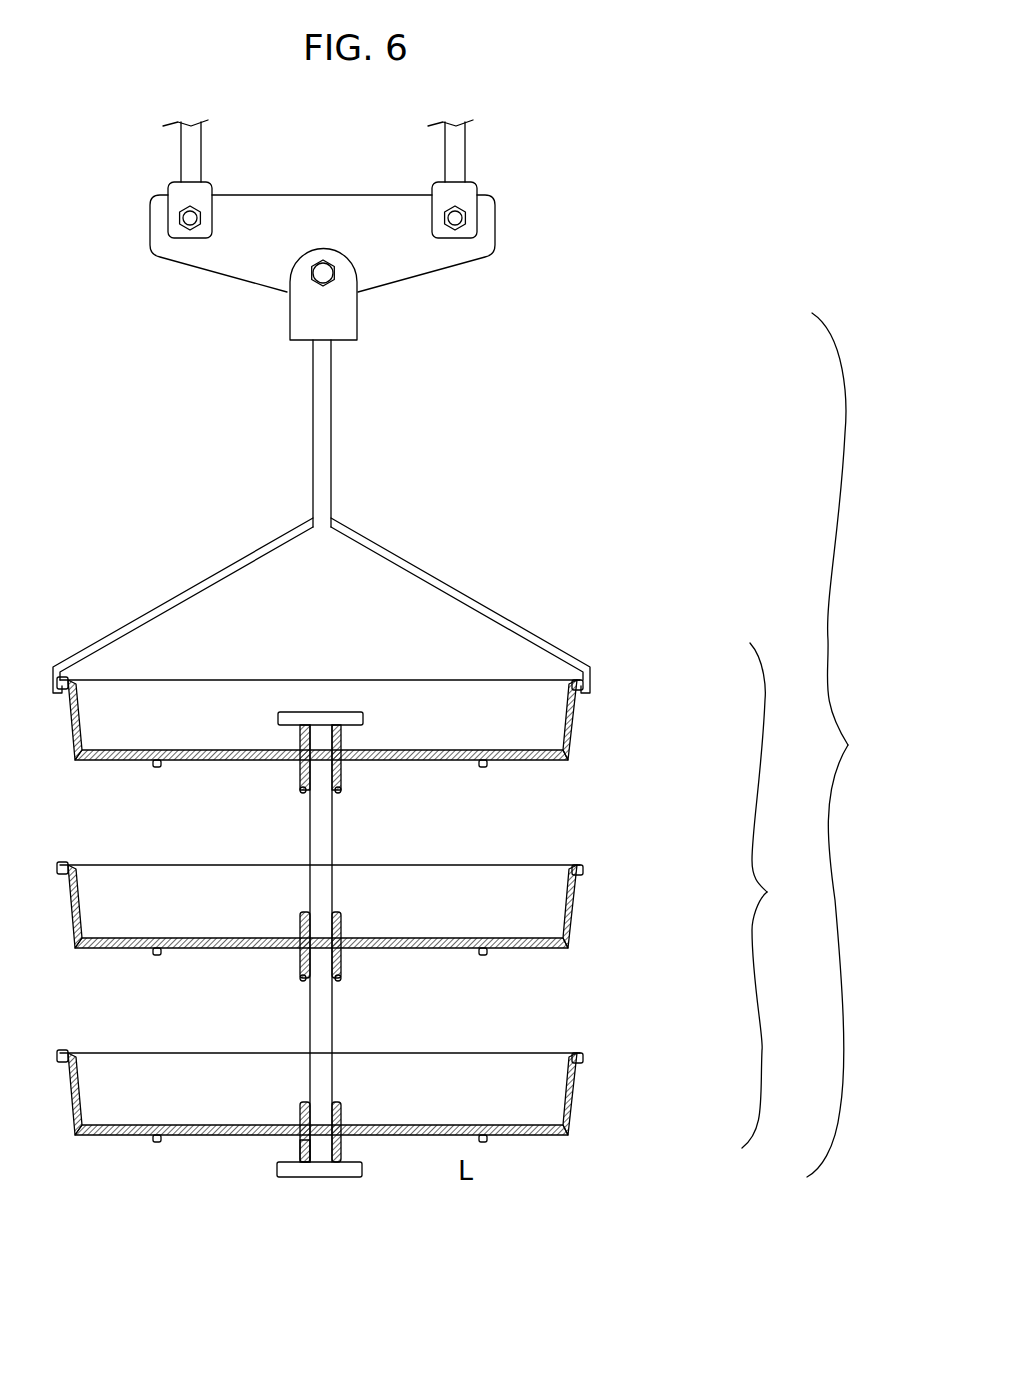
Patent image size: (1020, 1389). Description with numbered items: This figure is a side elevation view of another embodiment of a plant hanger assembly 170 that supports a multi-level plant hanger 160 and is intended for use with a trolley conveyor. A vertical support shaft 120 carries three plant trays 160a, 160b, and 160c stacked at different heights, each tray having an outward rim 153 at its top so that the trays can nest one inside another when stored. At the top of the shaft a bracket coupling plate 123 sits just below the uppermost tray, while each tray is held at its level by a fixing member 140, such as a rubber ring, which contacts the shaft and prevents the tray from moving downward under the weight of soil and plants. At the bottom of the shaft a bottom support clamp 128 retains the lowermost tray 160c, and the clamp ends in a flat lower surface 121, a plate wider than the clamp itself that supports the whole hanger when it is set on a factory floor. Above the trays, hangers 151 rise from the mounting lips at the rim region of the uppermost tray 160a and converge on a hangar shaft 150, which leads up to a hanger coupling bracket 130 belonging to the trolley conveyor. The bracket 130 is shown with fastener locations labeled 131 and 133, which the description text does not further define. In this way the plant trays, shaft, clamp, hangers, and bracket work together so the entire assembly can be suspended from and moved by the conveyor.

The vertical support shaft 120 is at (326, 825).
The flat lower surface 121 is at (353, 1168).
The bracket coupling plate 123 is at (300, 713).
The bottom support clamp 128 is at (300, 1147).
The hanger coupling bracket 130 is at (293, 213).
The fastening nut 131 is at (180, 218).
The center bolt 133 is at (320, 272).
The fixing member 140 is at (303, 790).
The hangar shaft 150 is at (327, 390).
The hanger 151 is at (456, 583).
The rim 153 is at (576, 670).
The plant hanger 160 is at (775, 895).
The plant tray 160a is at (605, 722).
The plant tray 160b is at (606, 910).
The plant tray 160c is at (606, 1097).
The plant hanger assembly 170 is at (851, 745).